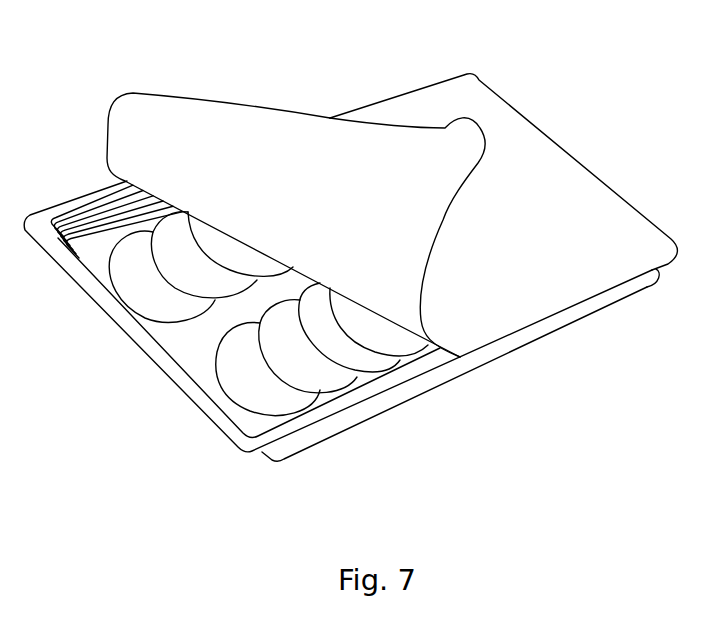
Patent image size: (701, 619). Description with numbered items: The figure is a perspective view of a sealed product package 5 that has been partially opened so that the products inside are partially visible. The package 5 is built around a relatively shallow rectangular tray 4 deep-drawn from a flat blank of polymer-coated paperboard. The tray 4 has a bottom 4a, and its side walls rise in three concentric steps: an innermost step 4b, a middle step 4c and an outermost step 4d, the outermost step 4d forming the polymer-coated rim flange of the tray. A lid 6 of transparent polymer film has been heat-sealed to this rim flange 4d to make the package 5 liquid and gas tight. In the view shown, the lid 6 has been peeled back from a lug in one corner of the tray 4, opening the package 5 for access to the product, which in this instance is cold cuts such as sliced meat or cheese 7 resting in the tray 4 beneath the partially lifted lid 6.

The tray 4 is at (500, 362).
The bottom 4a is at (110, 242).
The innermost step 4b is at (92, 226).
The middle step 4c is at (73, 221).
The outermost step 4d is at (100, 298).
The sealed product package 5 is at (598, 150).
The lid 6 is at (290, 138).
The cold cuts 7 is at (183, 307).